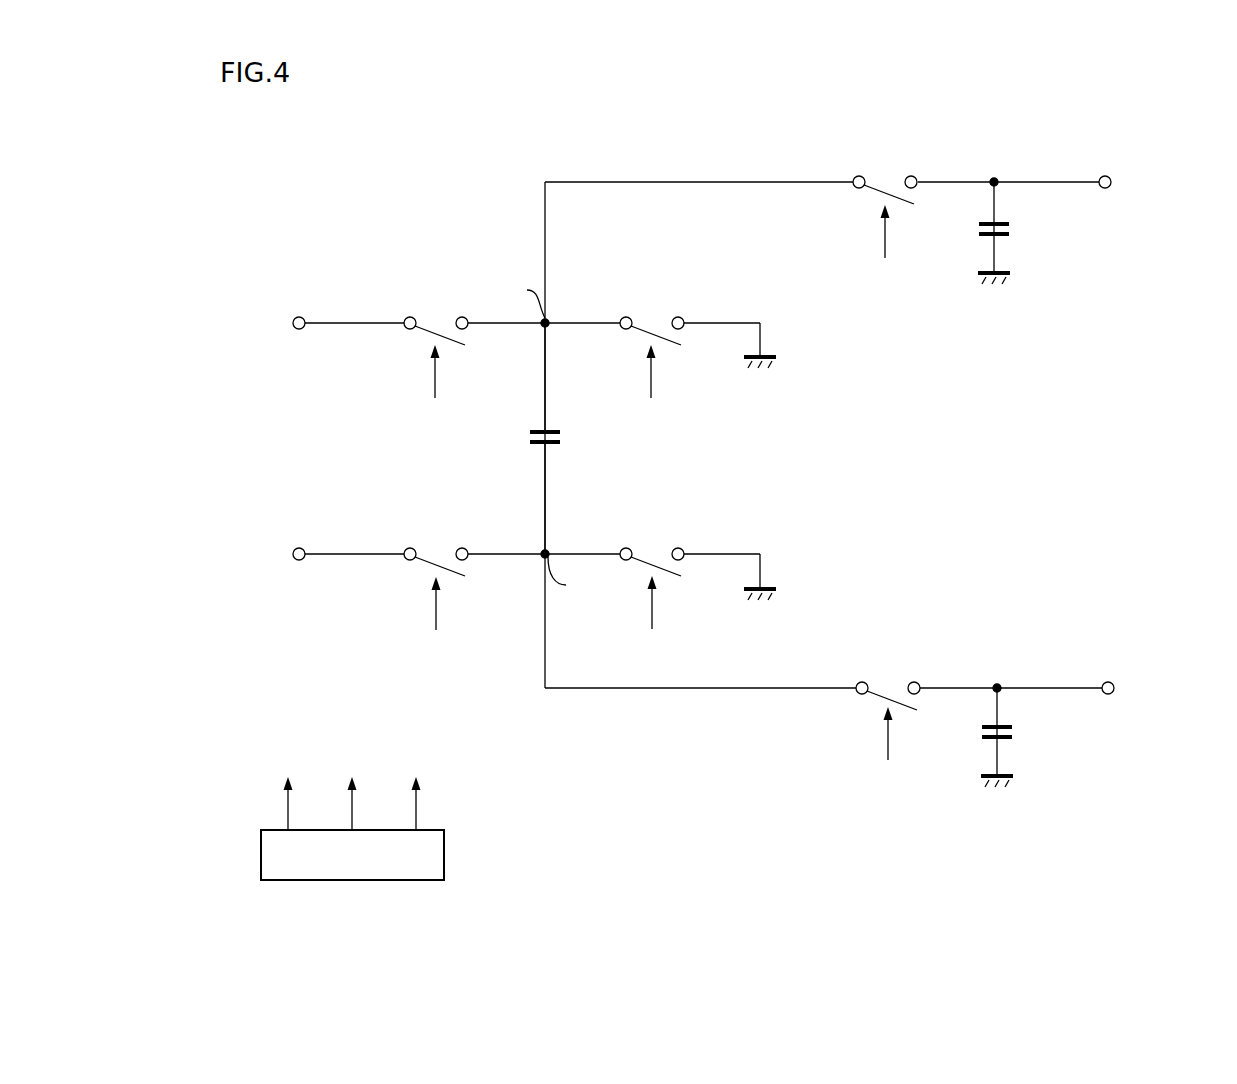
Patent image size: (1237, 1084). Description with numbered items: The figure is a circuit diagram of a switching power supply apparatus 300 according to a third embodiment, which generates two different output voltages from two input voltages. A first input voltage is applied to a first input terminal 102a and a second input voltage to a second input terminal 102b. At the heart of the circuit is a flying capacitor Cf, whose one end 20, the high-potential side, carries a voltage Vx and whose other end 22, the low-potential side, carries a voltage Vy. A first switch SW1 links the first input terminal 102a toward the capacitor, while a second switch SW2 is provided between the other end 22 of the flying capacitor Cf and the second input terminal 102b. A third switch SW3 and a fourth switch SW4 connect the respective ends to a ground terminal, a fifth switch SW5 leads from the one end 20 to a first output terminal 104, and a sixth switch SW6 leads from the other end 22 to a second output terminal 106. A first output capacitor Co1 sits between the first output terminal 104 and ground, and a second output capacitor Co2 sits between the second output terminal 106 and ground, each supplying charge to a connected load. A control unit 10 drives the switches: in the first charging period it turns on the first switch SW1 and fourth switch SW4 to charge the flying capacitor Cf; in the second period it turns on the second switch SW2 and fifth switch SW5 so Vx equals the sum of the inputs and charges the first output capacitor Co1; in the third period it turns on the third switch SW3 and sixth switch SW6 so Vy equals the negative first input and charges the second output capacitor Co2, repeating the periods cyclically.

The first input terminal 102a is at (302, 316).
The second input terminal 102b is at (302, 547).
The first output terminal 104 is at (1104, 176).
The second output terminal 106 is at (1107, 682).
The one end of the flying capacitor 20 is at (545, 376).
The other end of the flying capacitor 22 is at (545, 497).
The control unit 10 is at (446, 853).
The switching power supply apparatus 300 is at (737, 957).
The first switch SW1 is at (436, 359).
The second switch SW2 is at (436, 591).
The third switch SW3 is at (652, 359).
The fourth switch SW4 is at (652, 591).
The fifth switch SW5 is at (885, 219).
The sixth switch SW6 is at (888, 724).
The flying capacitor Cf is at (560, 438).
The first output capacitor Co1 is at (1018, 233).
The second output capacitor Co2 is at (1021, 737).
The voltage at one end of the flying capacitor Vx is at (519, 298).
The voltage at the other end of the flying capacitor Vy is at (572, 578).